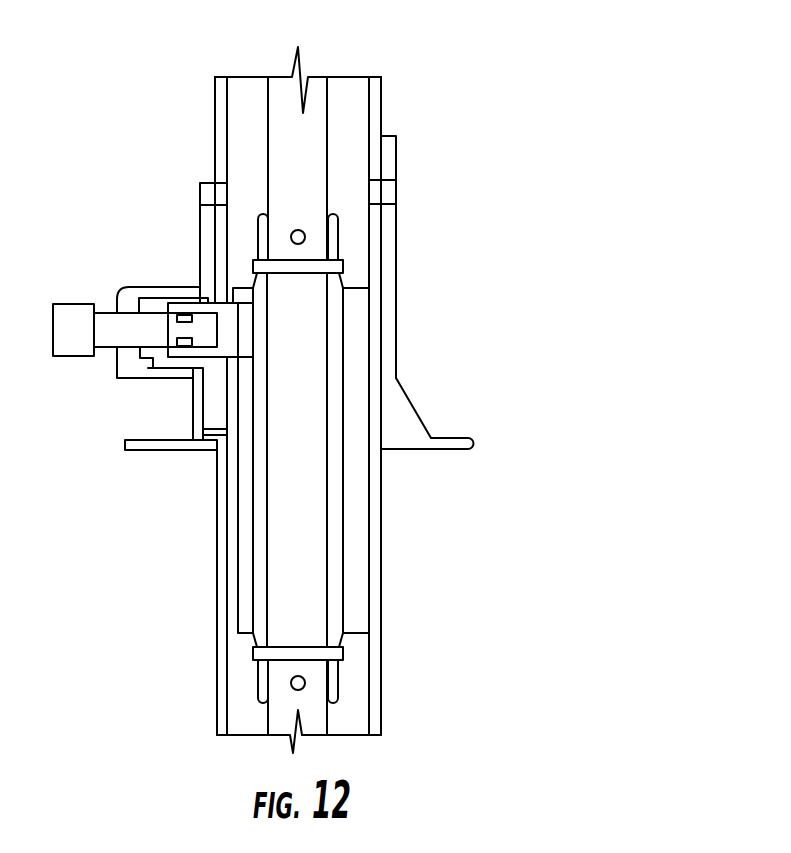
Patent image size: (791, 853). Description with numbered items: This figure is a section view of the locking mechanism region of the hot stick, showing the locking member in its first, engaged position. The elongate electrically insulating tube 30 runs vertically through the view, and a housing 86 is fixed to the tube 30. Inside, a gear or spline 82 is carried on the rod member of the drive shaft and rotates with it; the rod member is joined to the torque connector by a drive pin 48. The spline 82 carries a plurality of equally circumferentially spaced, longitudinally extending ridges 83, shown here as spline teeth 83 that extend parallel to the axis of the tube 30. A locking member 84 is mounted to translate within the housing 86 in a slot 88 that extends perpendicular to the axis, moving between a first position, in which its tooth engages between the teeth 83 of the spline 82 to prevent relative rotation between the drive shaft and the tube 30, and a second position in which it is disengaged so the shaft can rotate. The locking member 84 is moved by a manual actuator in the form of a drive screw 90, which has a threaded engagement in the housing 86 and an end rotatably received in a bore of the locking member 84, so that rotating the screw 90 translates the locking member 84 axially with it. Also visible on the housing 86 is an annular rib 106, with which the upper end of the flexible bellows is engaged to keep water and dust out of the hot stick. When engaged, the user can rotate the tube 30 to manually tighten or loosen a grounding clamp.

The elongate electrically insulating tube 30 is at (375, 113).
The drive pin 48 is at (279, 83).
The spline 82 is at (262, 613).
The ridges 83 is at (253, 513).
The locking member 84 is at (228, 303).
The housing 86 is at (397, 253).
The slot 88 is at (157, 360).
The drive screw 90 is at (53, 320).
The annular rib 106 is at (455, 438).